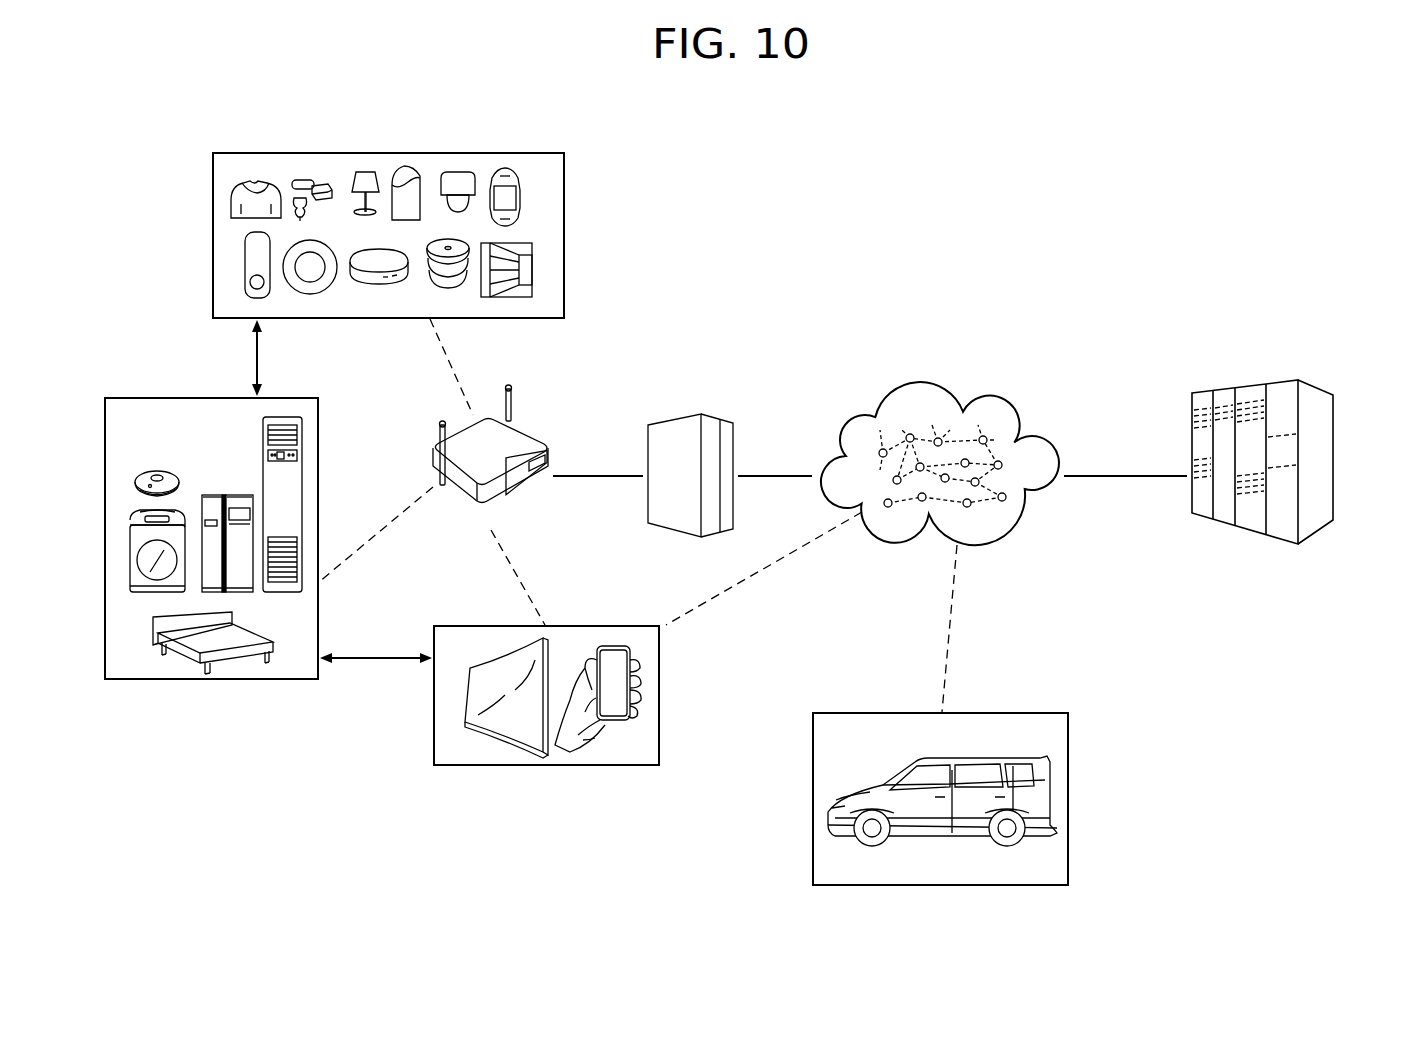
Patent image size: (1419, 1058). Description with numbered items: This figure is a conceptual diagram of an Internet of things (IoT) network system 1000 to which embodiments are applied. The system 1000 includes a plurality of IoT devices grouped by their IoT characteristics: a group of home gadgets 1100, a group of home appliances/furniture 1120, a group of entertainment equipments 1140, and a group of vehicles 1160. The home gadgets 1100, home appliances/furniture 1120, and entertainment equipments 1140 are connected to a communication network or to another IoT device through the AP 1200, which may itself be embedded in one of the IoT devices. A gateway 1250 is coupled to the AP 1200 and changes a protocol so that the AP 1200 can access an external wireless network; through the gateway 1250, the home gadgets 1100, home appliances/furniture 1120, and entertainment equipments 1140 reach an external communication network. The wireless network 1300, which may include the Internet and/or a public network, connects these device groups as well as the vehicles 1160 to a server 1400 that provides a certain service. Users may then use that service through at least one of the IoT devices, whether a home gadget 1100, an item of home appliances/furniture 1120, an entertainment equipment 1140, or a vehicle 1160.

The IoT network system 1000 is at (1262, 163).
The home gadgets 1100 is at (489, 153).
The home appliances/furniture 1120 is at (150, 398).
The entertainment equipments 1140 is at (577, 626).
The vehicles 1160 is at (1000, 713).
The AP 1200 is at (522, 430).
The gateway 1250 is at (710, 417).
The wireless network 1300 is at (995, 406).
The server 1400 is at (1317, 383).